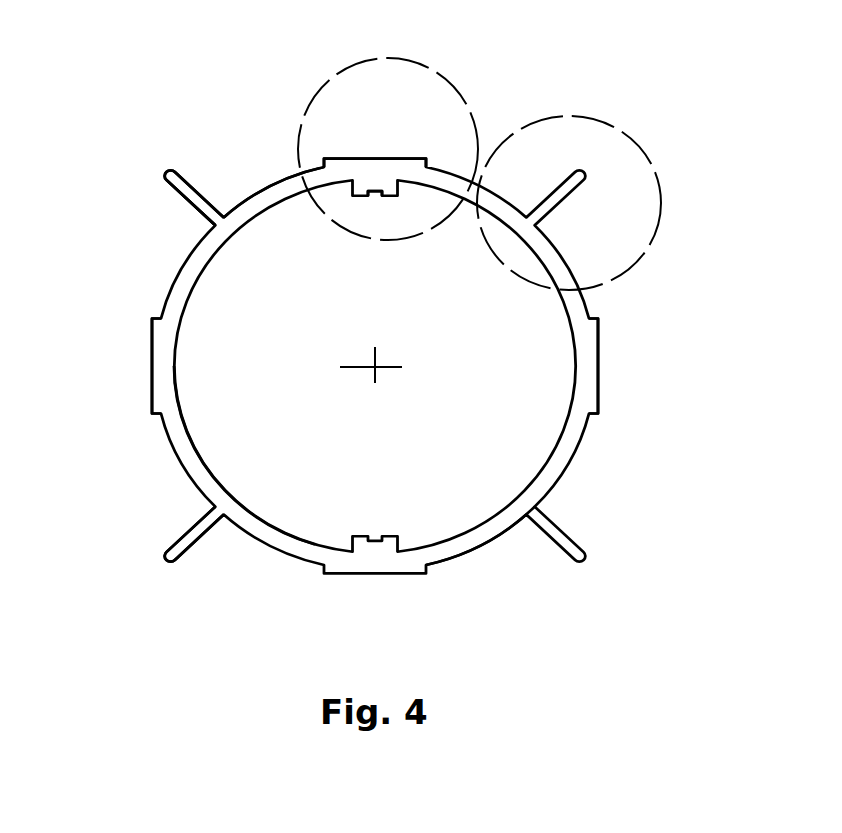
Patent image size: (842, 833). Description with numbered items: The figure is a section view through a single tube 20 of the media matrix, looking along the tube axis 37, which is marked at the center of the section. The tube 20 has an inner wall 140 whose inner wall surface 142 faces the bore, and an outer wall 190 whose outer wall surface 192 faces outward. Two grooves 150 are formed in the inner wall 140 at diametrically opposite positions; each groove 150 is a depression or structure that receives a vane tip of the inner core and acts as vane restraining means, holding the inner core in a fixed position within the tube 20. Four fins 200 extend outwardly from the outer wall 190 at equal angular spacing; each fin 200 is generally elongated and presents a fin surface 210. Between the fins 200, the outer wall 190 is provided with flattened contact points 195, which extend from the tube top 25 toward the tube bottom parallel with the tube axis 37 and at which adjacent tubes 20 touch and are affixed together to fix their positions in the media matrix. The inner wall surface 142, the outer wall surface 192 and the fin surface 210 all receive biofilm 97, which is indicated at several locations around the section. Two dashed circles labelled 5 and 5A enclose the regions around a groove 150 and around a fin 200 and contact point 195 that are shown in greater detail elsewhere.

The detail area of FIG. 5 is at (443, 82).
The detail area of FIG. 5A is at (632, 137).
The tube 20 is at (584, 300).
The tube top 25 is at (497, 525).
The tube axis 37 is at (375, 367).
The biofilm 97 is at (190, 475).
The inner wall 140 is at (500, 523).
The inner wall surface 142 is at (184, 432).
The groove 150 is at (372, 192).
The outer wall 190 is at (276, 181).
The outer wall surface 192 is at (172, 437).
The contact point 195 is at (375, 158).
The fin 200 is at (198, 190).
The fin surface 210 is at (188, 202).